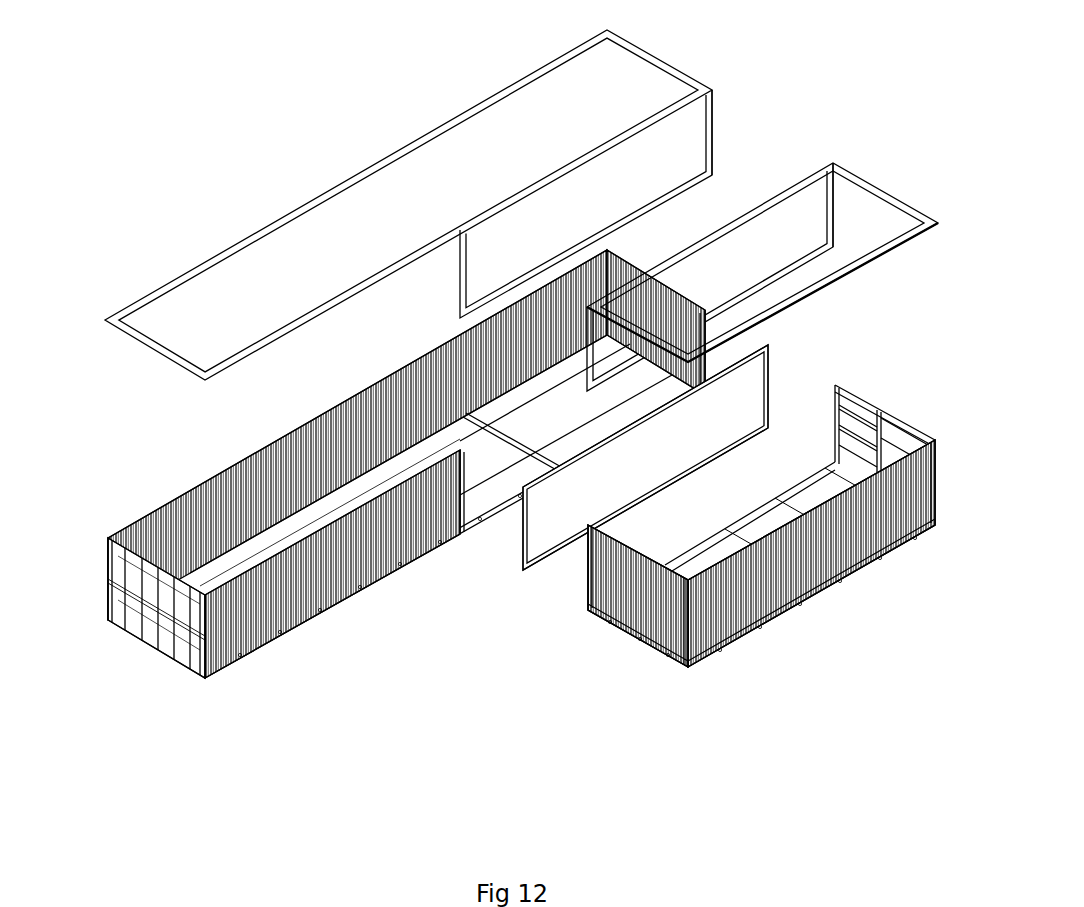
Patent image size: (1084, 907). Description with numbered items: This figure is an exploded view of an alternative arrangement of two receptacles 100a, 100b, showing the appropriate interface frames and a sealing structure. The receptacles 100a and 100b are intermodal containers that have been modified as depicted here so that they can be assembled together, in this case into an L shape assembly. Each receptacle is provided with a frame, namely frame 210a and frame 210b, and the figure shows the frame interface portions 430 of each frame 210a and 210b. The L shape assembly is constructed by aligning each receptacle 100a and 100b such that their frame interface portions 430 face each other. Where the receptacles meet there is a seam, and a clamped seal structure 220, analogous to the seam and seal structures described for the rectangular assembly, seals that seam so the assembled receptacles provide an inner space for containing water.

The receptacle 100a is at (140, 606).
The receptacle 100b is at (630, 622).
The frame 210a is at (367, 166).
The frame 210b is at (912, 200).
The clamped seal structure 220 is at (528, 566).
The frame interface portion 430 is at (715, 140).